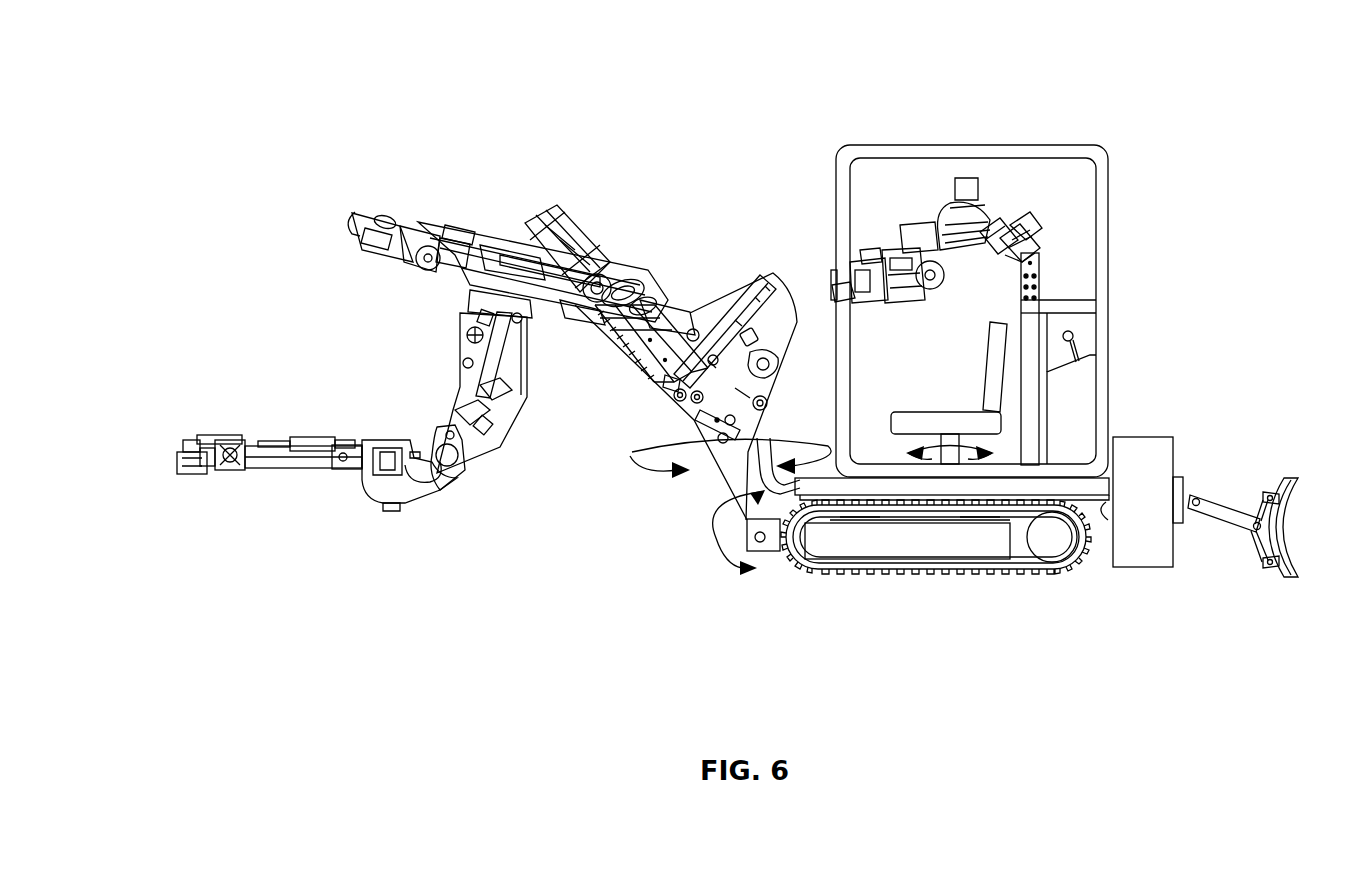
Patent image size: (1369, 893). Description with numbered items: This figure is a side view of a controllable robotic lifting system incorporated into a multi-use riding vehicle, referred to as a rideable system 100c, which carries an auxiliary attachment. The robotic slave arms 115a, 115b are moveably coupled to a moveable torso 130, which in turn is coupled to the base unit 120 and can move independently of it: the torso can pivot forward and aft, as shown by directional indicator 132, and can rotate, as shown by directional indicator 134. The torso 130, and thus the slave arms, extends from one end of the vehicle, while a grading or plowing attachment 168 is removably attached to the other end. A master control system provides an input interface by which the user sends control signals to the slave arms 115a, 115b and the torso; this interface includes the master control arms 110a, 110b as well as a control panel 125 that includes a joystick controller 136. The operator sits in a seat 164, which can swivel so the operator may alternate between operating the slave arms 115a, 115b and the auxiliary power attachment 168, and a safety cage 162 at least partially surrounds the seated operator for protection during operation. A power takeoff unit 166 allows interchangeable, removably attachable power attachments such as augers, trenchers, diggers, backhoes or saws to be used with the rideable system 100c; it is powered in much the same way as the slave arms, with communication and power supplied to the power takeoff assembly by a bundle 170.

The rideable system 100c is at (200, 142).
The master control arm 110a is at (1003, 185).
The master control arm 110b is at (1030, 205).
The robotic slave arm 115a is at (335, 500).
The robotic slave arm 115b is at (378, 190).
The base unit 120 is at (1000, 482).
The control panel 125 is at (1092, 338).
The moveable torso 130 is at (728, 473).
The directional indicator 132 is at (722, 553).
The directional indicator 134 is at (630, 456).
The joystick controller 136 is at (1072, 333).
The safety cage 162 is at (1105, 177).
The seat 164 is at (925, 400).
The power takeoff unit 166 is at (1170, 428).
The grading or plowing attachment 168 is at (1278, 462).
The bundle 170 is at (1112, 518).